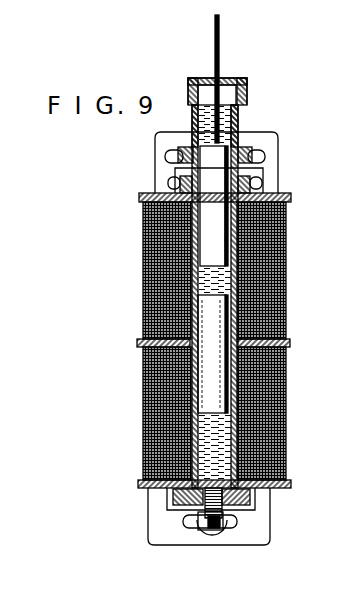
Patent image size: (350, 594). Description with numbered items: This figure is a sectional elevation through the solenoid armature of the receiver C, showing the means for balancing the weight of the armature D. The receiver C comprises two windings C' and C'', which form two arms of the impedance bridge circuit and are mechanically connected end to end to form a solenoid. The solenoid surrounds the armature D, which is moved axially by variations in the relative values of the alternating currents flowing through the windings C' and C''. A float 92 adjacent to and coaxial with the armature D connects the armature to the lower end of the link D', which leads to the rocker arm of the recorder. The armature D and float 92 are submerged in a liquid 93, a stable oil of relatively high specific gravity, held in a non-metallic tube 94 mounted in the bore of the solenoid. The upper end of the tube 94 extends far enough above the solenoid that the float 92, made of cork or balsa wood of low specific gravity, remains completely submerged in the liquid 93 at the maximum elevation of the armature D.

The receiver C is at (173, 336).
The winding C'' is at (233, 270).
The winding C' is at (232, 413).
The float 92 is at (232, 181).
The liquid 93 is at (273, 467).
The non-metallic tube 94 is at (242, 119).
The armature D is at (260, 354).
The link D' is at (242, 79).